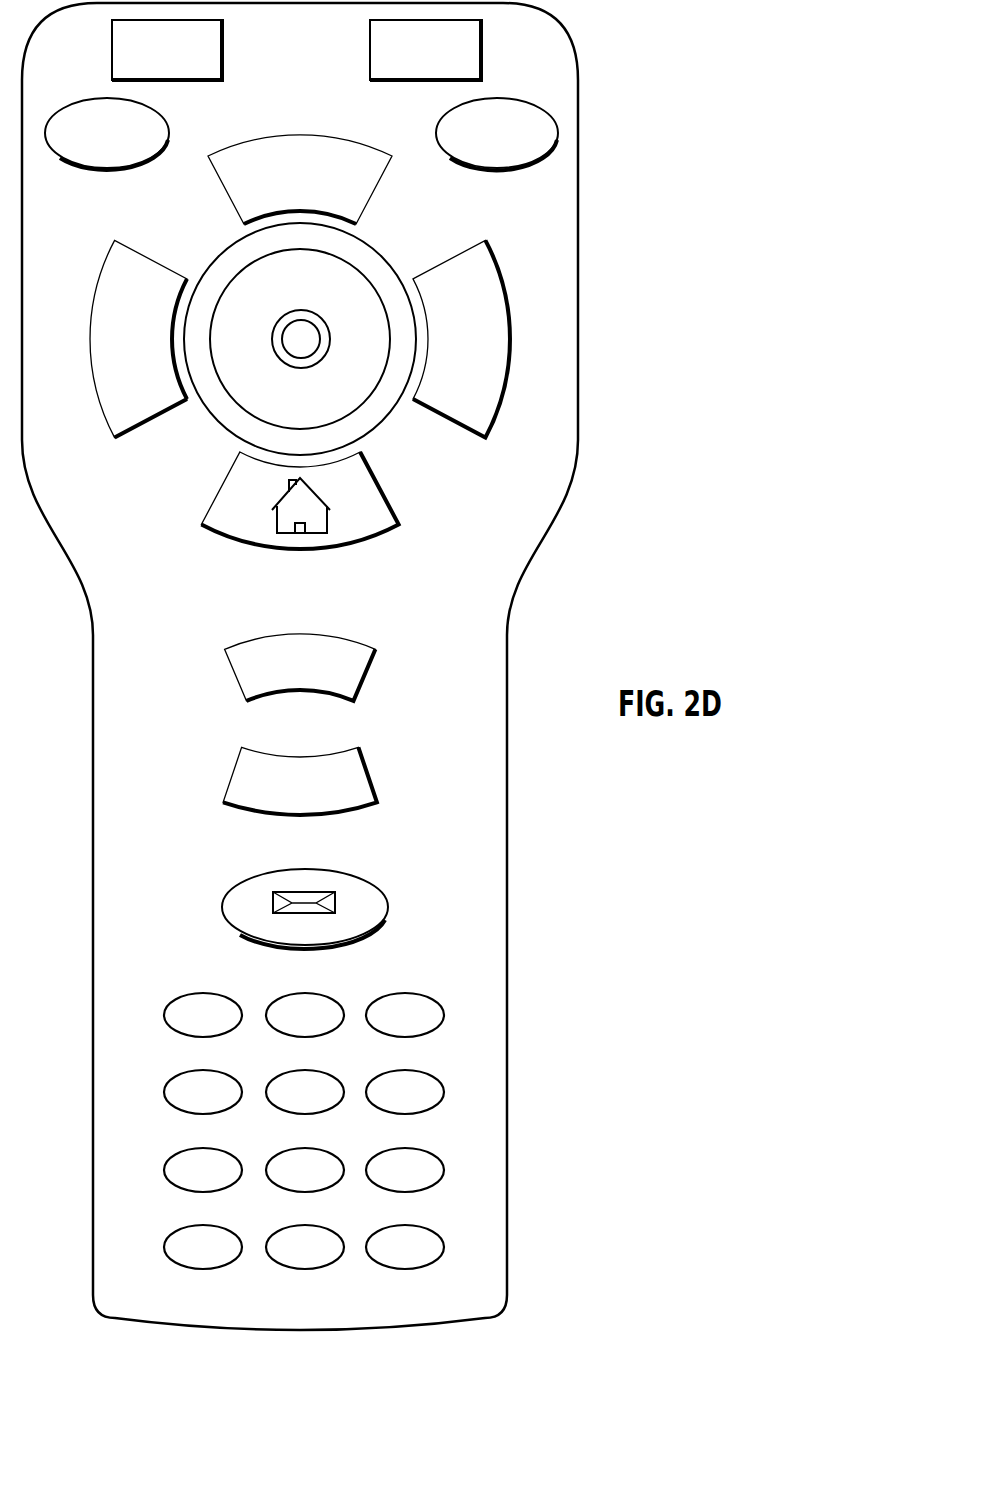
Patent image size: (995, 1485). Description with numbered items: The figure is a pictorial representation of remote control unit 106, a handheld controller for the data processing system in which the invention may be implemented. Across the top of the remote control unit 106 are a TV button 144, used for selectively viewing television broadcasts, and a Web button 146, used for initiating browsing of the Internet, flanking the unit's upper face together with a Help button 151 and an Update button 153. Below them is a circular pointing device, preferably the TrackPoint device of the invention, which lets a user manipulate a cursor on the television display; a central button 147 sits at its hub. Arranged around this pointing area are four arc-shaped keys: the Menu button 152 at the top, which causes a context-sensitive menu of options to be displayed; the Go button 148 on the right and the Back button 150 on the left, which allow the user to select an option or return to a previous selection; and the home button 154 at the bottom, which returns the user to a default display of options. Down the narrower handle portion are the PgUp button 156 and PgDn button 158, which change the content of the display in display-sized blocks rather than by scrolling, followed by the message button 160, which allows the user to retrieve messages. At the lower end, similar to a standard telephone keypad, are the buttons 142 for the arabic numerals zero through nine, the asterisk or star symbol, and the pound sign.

The remote control unit 106 is at (508, 878).
The buttons 142 is at (540, 1263).
The TV button 144 is at (223, 62).
The Web button 146 is at (482, 62).
The center select button 147 is at (299, 337).
The Go button 148 is at (503, 272).
The Back button 150 is at (100, 282).
The Help button 151 is at (128, 168).
The Menu button 152 is at (267, 132).
The Update button 153 is at (558, 133).
The home button 154 is at (386, 500).
The PgUp button 156 is at (367, 670).
The PgDn button 158 is at (375, 783).
The message button 160 is at (390, 902).